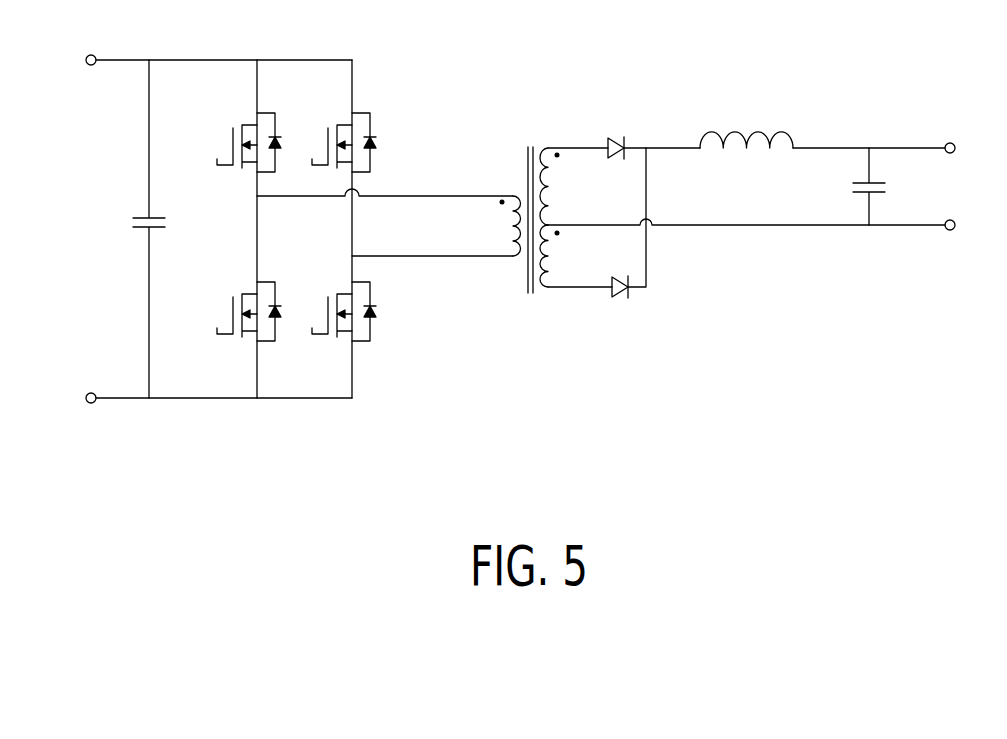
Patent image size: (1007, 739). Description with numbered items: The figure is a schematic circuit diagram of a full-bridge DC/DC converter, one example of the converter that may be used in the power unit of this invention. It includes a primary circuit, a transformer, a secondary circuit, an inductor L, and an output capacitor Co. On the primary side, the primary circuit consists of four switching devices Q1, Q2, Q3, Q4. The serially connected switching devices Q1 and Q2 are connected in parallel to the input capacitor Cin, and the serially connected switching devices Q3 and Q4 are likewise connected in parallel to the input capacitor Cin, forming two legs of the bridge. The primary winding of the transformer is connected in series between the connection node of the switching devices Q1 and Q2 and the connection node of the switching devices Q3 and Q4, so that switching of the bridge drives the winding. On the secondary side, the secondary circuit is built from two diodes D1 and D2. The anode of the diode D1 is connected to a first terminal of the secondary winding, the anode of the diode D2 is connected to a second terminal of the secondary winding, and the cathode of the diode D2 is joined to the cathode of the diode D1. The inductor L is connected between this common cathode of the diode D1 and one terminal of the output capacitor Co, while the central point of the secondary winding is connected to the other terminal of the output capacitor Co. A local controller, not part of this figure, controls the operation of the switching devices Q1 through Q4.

The switching device Q1 is at (237, 142).
The switching device Q2 is at (239, 311).
The switching device Q3 is at (336, 142).
The switching device Q4 is at (334, 311).
The input capacitor Cin is at (126, 229).
The diode D1 is at (616, 129).
The diode D2 is at (618, 305).
The inductor L is at (746, 121).
The output capacitor Co is at (851, 186).